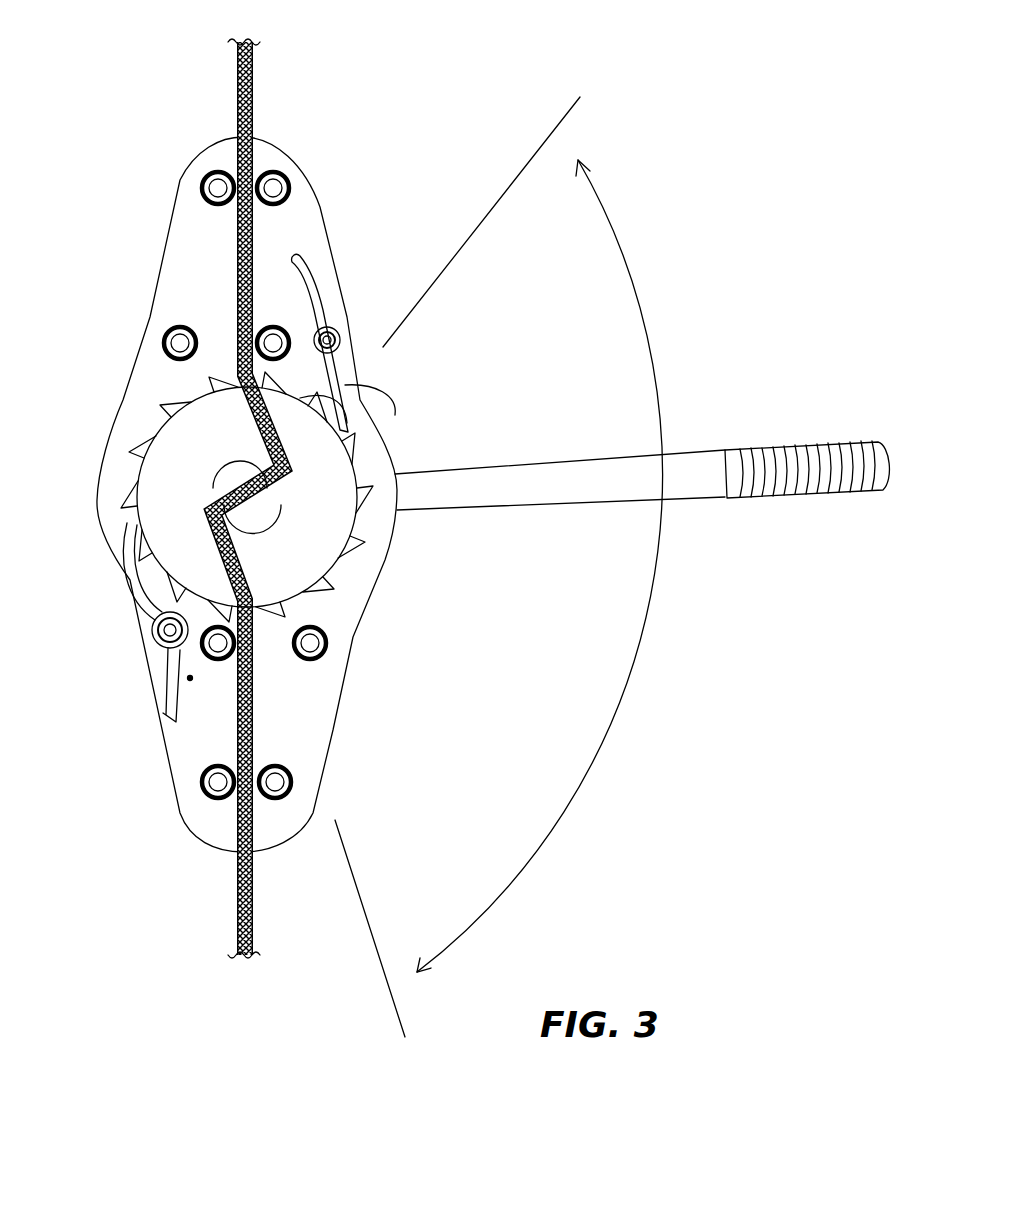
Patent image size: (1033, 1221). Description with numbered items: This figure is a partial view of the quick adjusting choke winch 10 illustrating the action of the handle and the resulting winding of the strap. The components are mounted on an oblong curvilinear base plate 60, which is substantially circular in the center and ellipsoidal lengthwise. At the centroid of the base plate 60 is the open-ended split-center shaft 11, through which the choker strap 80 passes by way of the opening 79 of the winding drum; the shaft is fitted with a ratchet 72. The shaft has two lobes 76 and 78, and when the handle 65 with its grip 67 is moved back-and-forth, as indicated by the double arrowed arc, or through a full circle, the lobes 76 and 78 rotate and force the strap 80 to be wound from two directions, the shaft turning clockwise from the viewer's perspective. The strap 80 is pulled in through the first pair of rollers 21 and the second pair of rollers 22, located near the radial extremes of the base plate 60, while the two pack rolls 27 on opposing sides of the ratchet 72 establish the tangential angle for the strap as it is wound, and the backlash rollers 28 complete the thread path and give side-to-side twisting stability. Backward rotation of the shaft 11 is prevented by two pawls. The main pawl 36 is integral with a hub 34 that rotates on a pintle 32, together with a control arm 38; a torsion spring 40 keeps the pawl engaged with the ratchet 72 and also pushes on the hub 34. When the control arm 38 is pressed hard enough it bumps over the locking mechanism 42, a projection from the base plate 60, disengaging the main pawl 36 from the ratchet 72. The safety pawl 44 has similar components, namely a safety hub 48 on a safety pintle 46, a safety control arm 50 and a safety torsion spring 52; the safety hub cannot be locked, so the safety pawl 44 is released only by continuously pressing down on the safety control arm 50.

The quick adjusting choke winch 10 is at (443, 325).
The open-ended split-center shaft 11 is at (232, 463).
The first pair of rollers 21 is at (218, 178).
The second pair of rollers 22 is at (205, 187).
The pack roll 27 is at (287, 325).
The backlash rollers 28 is at (172, 338).
The pintle 32 is at (173, 630).
The hub 34 is at (162, 620).
The main pawl 36 is at (127, 542).
The control arm 38 is at (173, 702).
The torsion spring 40 is at (180, 652).
The locking mechanism 42 is at (190, 678).
The safety pawl 44 is at (347, 424).
The safety pintle 46 is at (342, 343).
The safety hub 48 is at (340, 328).
The safety control arm 50 is at (318, 285).
The safety torsion spring 52 is at (360, 392).
The base plate 60 is at (372, 608).
The handle 65 is at (687, 467).
The grip 67 is at (847, 470).
The ratchet 72 is at (335, 521).
The lobe 76 is at (222, 478).
The lobe 78 is at (265, 527).
The opening 79 is at (220, 490).
The choker strap 80 is at (250, 77).